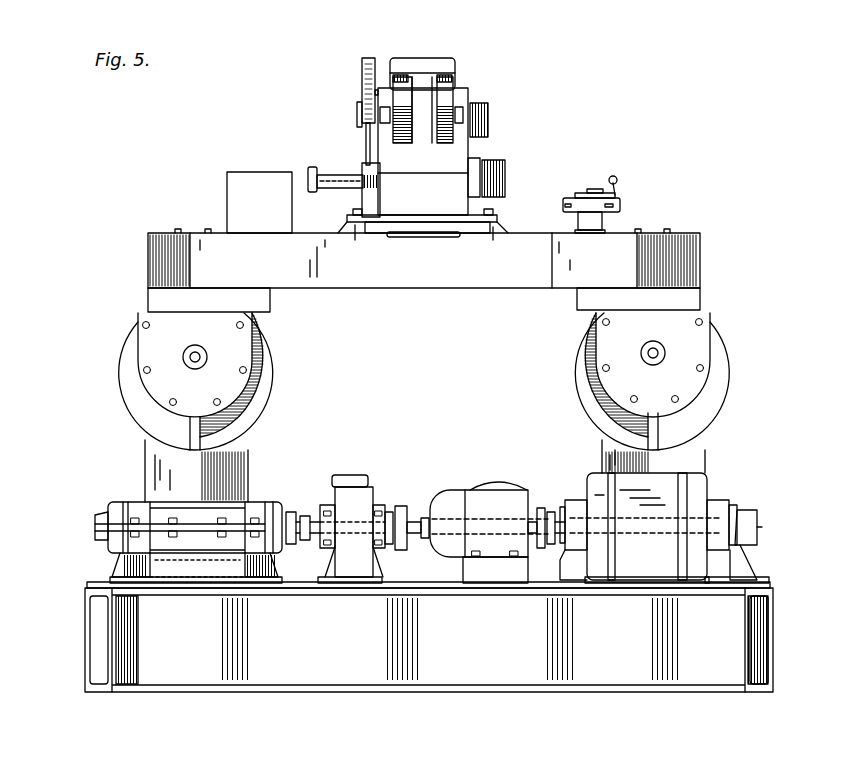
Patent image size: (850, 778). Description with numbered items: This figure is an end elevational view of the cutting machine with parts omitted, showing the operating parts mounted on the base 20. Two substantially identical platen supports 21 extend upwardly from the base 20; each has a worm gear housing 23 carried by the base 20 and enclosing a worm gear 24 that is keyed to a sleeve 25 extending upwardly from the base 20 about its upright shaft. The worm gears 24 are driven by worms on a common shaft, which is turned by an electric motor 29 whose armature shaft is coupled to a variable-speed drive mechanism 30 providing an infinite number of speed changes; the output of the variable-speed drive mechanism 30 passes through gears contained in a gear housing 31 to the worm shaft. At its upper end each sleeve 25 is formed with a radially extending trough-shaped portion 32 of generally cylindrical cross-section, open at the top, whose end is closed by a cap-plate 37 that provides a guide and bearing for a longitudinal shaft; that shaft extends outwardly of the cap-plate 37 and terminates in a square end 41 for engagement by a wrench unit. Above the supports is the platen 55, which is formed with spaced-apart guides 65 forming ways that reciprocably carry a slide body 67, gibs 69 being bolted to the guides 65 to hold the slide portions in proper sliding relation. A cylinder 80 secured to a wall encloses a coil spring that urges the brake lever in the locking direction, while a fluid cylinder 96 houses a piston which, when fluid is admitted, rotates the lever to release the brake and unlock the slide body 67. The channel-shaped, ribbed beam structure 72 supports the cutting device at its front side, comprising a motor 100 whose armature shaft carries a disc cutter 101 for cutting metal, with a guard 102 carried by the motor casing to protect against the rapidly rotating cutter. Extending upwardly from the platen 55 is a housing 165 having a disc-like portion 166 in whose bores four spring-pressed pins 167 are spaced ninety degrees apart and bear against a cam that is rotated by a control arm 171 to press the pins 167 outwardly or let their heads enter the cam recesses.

The base 20 is at (78, 631).
The platen support 21 is at (136, 466).
The worm gear housing 23 is at (107, 512).
The worm gear 24 is at (665, 498).
The sleeve 25 is at (232, 455).
The electric motor 29 is at (742, 506).
The variable-speed drive mechanism 30 is at (490, 498).
The gear housing 31 is at (351, 481).
The trough-shaped portion 32 is at (270, 377).
The cap-plate 37 is at (243, 352).
The square end 41 is at (190, 357).
The platen 55 is at (151, 264).
The guide 65 is at (355, 240).
The slide body 67 is at (432, 212).
The gib 69 is at (352, 212).
The beam structure 72 is at (439, 54).
The cylinder 80 is at (325, 175).
The fluid cylinder 96 is at (501, 172).
The motor 100 is at (452, 97).
The disc cutter 101 is at (370, 150).
The guard 102 is at (362, 76).
The housing 165 is at (585, 222).
The disc-like portion 166 is at (568, 203).
The pin 167 is at (620, 208).
The control arm 171 is at (620, 181).